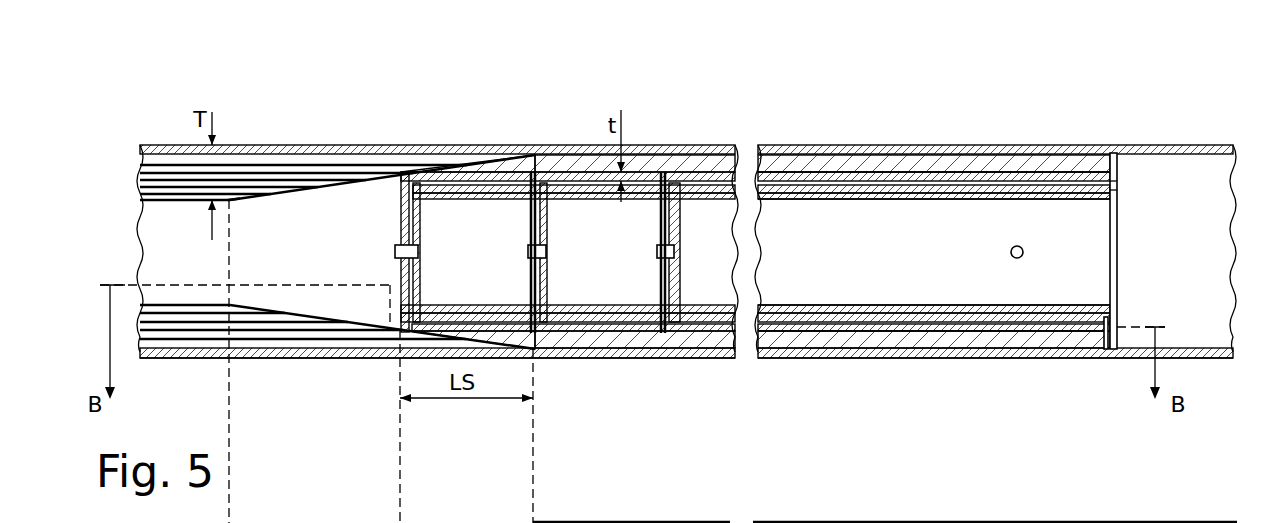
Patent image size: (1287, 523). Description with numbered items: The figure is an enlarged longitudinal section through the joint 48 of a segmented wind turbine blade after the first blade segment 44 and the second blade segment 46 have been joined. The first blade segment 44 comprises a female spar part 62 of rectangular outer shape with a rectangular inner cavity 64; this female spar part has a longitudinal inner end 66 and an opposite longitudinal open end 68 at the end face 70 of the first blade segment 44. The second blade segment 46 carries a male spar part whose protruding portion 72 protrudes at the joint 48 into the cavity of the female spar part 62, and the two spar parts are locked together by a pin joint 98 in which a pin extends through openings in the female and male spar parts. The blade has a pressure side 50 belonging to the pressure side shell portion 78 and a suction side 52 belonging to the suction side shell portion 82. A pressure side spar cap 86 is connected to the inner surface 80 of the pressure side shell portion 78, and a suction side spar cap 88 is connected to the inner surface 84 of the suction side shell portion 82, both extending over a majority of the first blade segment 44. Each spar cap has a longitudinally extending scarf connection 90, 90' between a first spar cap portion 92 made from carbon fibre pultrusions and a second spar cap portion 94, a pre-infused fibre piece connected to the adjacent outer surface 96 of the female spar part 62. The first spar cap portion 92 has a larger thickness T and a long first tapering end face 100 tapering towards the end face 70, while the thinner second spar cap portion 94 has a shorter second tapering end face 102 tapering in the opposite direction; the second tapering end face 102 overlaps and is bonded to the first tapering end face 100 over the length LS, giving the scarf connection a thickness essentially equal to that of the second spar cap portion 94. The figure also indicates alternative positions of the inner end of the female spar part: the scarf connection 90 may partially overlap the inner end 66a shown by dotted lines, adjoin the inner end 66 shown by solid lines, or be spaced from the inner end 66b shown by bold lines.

The first blade segment 44 is at (932, 147).
The second blade segment 46 is at (1230, 147).
The joint 48 is at (1112, 182).
The pressure side 50 is at (958, 147).
The suction side 52 is at (845, 360).
The female spar part 62 is at (1035, 170).
The inner cavity 64 is at (822, 183).
The longitudinal inner end 66 is at (519, 200).
The longitudinal inner end 66a is at (388, 200).
The longitudinal inner end 66b is at (663, 200).
The longitudinal open end 68 is at (1112, 188).
The end face 70 is at (1112, 176).
The protruding portion 72 is at (708, 165).
The pressure side shell portion 78 is at (772, 162).
The inner surface 80 is at (873, 157).
The suction side shell portion 82 is at (1066, 357).
The inner surface 84 is at (990, 342).
The pressure side spar cap 86 is at (435, 147).
The suction side spar cap 88 is at (343, 357).
The scarf connection 90 is at (382, 132).
The scarf connection 90' is at (427, 368).
The first spar cap portion 92 is at (273, 175).
The second spar cap portion 94 is at (686, 163).
The outer surface 96 is at (1070, 180).
The pin joint 98 is at (1017, 259).
The first tapering end face 100 is at (291, 197).
The second tapering end face 102 is at (498, 152).